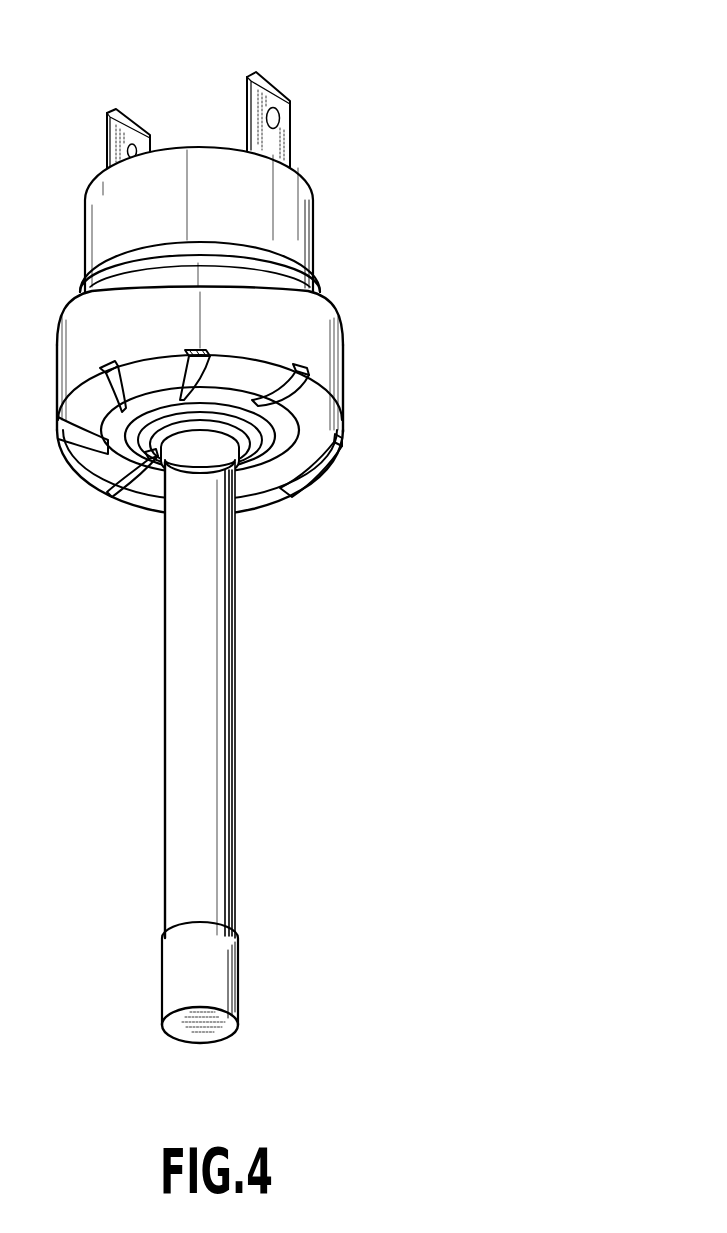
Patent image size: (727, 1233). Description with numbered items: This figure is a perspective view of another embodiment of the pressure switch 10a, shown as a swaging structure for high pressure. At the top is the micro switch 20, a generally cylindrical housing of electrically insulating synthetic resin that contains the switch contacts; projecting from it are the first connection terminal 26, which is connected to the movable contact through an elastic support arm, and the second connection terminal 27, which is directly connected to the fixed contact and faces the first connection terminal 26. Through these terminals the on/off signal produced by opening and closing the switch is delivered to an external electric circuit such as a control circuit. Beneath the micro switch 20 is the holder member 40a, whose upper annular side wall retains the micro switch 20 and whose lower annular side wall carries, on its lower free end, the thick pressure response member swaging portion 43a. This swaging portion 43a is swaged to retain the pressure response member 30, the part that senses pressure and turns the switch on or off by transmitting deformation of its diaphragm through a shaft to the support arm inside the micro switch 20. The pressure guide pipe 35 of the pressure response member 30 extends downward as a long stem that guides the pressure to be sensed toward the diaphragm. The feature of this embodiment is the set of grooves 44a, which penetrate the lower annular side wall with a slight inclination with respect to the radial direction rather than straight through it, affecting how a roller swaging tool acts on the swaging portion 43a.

The pressure switch 10a is at (404, 65).
The micro switch 20 is at (317, 238).
The first connection terminal 26 is at (143, 125).
The second connection terminal 27 is at (278, 83).
The pressure response member 30 is at (148, 450).
The pressure guide pipe 35 is at (207, 697).
The cover 40a is at (345, 370).
The pressure response member swaging portion 43a is at (261, 503).
The grooves 44a is at (295, 487).